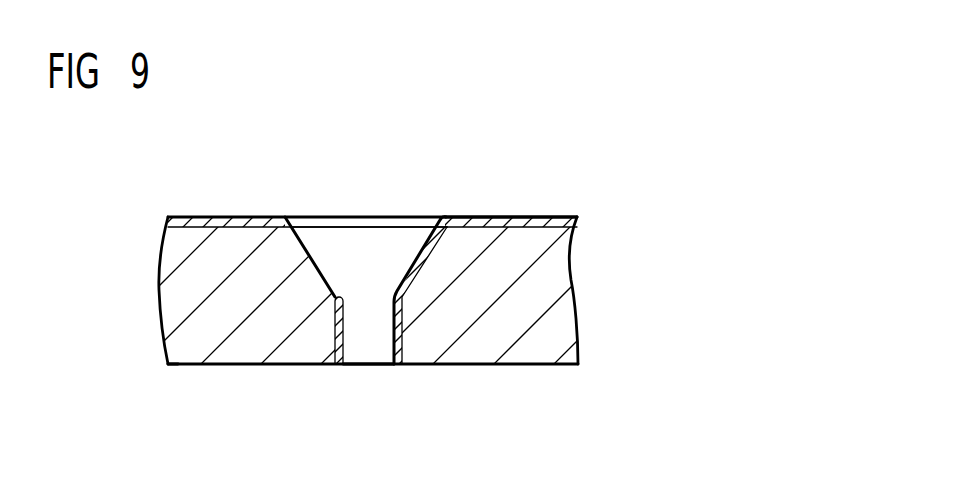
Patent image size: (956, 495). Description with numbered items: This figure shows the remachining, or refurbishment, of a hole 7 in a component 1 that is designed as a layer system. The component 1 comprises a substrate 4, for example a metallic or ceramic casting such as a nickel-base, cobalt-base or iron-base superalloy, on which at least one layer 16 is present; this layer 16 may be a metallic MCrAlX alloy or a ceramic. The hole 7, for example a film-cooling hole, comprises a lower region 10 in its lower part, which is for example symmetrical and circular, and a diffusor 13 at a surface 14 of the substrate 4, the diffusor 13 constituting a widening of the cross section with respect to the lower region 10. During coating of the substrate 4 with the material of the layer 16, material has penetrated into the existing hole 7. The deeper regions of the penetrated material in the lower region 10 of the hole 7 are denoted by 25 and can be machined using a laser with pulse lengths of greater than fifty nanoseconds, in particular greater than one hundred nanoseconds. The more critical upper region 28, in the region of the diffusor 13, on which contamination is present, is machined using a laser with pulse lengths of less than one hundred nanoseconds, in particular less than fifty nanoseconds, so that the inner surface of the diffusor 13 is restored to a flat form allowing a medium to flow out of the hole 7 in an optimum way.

The component 1 is at (165, 370).
The substrate 4 is at (530, 299).
The hole 7 is at (371, 253).
The lower region of the hole 10 is at (370, 348).
The diffusor 13 is at (321, 233).
The surface of the substrate 14 is at (500, 217).
The layer 16 is at (225, 222).
The deeper regions 25 is at (347, 340).
The upper region 28 is at (425, 232).